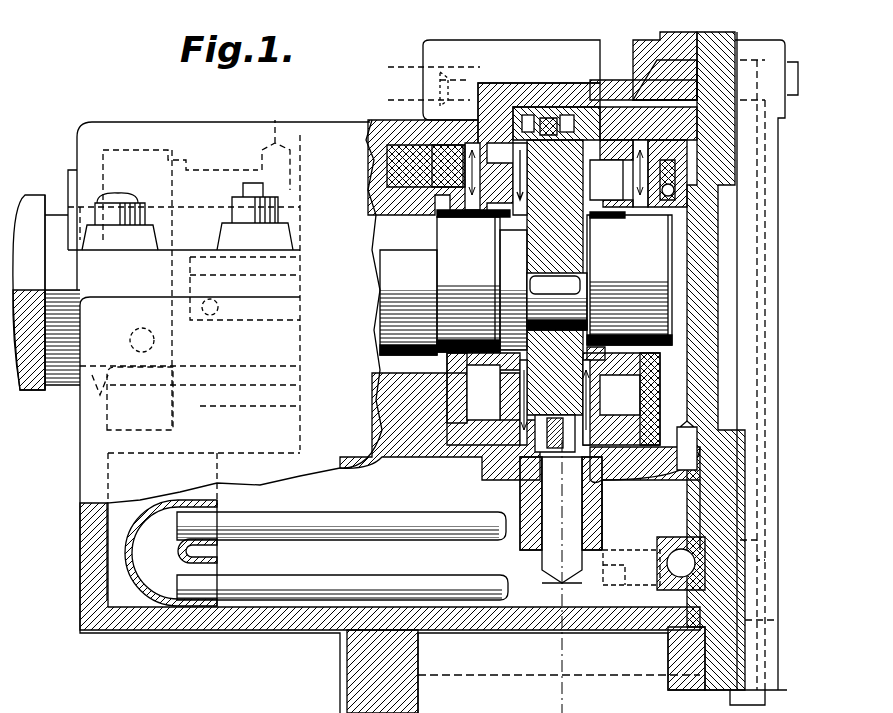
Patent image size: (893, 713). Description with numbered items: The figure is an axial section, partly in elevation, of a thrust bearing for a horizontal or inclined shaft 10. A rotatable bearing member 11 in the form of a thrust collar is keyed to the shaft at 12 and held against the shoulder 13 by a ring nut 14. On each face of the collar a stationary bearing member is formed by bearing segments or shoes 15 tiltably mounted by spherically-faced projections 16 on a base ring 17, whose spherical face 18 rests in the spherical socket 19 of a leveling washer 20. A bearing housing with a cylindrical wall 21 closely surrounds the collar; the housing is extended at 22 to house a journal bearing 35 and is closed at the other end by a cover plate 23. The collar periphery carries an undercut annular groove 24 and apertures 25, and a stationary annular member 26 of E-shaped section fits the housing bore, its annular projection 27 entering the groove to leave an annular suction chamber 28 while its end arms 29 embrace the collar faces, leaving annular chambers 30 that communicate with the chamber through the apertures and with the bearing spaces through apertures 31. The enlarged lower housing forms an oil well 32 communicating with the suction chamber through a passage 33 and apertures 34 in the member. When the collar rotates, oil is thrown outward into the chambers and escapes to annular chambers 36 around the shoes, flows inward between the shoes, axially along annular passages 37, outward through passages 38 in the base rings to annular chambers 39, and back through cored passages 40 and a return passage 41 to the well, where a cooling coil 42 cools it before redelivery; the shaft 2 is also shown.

The spindle shaft 2 is at (553, 140).
The horizontal or inclined shaft 10 is at (28, 200).
The rotatable bearing member 11 is at (520, 235).
The key 12 is at (535, 283).
The shoulder 13 is at (525, 330).
The ring nut 14 is at (629, 280).
The bearing segments or shoes 15 is at (563, 311).
The spherically-faced projections 16 is at (455, 462).
The base ring 17 is at (427, 353).
The spherical face 18 is at (668, 195).
The spherical socket 19 is at (663, 175).
The leveling washer 20 is at (670, 400).
The cylindrical wall 21 is at (488, 95).
The housing extension 22 is at (258, 133).
The cover plate 23 is at (712, 310).
The annular groove 24 is at (630, 462).
The apertures 25 is at (582, 90).
The stationary annular member 26 is at (568, 532).
The annular projection 27 is at (560, 110).
The annular suction chamber 28 is at (528, 112).
The end arms 29 is at (628, 108).
The annular chambers 30 is at (505, 500).
The apertures 31 is at (505, 107).
The oil well 32 is at (602, 607).
The passage 33 is at (535, 575).
The apertures 34 is at (525, 500).
The journal bearing 35 is at (413, 377).
The annular chambers 36 is at (490, 88).
The annular passages 37 is at (490, 215).
The passages 38 is at (470, 200).
The annular chambers 39 is at (700, 90).
The cored passages 40 is at (680, 57).
The return passage 41 is at (690, 650).
The cooling coil 42 is at (268, 590).